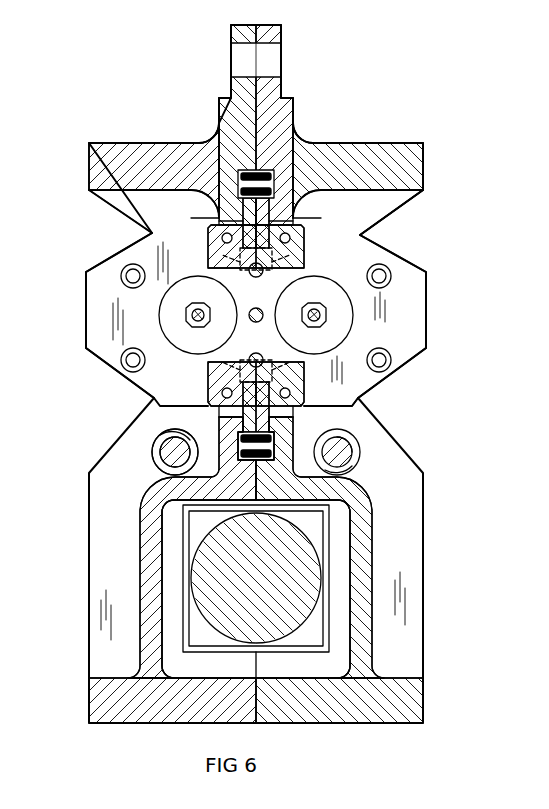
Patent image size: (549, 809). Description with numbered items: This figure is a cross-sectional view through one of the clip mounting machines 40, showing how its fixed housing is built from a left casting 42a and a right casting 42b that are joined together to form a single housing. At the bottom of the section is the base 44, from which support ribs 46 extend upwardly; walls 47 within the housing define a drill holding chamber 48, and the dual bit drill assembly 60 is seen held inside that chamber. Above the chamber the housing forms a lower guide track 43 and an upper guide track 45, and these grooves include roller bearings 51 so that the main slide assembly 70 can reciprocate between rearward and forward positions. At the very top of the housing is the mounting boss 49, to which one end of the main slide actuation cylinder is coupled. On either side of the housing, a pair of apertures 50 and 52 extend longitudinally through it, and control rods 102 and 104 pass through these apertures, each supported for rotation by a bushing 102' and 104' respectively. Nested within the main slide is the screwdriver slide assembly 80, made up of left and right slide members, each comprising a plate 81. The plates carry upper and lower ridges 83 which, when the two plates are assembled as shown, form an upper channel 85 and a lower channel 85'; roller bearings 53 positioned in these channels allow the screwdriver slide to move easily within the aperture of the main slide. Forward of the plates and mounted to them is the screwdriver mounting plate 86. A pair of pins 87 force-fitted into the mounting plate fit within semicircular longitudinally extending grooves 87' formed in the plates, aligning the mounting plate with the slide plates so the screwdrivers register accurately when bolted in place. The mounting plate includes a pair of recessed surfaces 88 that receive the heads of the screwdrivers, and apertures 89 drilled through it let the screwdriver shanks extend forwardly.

The clip mounting machine 40 is at (426, 104).
The left casting 42a is at (118, 137).
The right casting 42b is at (346, 137).
The lower guide track 43 is at (160, 452).
The base 44 is at (425, 692).
The upper guide track 45 is at (243, 176).
The support ribs 46 is at (425, 608).
The walls 47 is at (374, 634).
The drill holding chamber 48 is at (322, 522).
The mounting boss 49 is at (282, 58).
The aperture 50 is at (155, 470).
The roller bearings 51 is at (262, 171).
The aperture 52 is at (360, 447).
The roller bearings 53 is at (366, 236).
The dual bit drill assembly 60 is at (292, 568).
The main slide assembly 70 is at (290, 221).
The screwdriver slide assembly 80 is at (392, 262).
The plate 81 is at (200, 254).
The ridges 83 is at (150, 233).
The upper channel 85 is at (231, 215).
The lower channel 85' is at (232, 399).
The screwdriver mounting plate 86 is at (410, 293).
The pins 87 is at (342, 320).
The semicircular grooves 87' is at (142, 318).
The recessed surfaces 88 is at (341, 325).
The apertures 89 is at (186, 319).
The control rod 102 is at (120, 447).
The bushing 102' is at (125, 421).
The control rod 104 is at (412, 491).
The bushing 104' is at (421, 464).